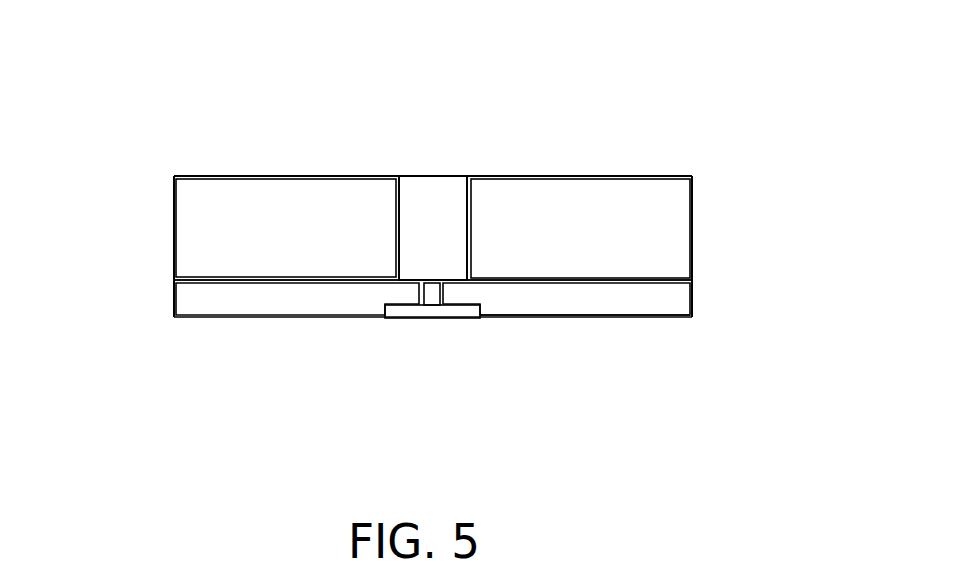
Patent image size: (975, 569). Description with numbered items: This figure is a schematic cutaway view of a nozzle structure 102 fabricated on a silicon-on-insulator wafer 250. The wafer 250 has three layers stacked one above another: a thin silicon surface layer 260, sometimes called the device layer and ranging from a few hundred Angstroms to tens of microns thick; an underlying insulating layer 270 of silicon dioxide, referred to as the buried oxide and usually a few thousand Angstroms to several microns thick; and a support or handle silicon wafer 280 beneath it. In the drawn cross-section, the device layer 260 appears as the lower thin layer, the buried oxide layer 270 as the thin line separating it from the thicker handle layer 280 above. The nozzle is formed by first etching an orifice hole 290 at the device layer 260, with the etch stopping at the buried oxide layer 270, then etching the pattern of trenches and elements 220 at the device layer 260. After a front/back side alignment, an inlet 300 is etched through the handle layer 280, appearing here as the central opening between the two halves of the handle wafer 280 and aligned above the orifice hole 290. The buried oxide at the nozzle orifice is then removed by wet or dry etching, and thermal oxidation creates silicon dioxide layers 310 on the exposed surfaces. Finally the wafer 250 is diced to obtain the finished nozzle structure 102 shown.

The display device / assembly 102 is at (670, 108).
The elements 220 is at (286, 303).
The SOI wafer 250 is at (155, 180).
The surface layer 260 is at (653, 303).
The insulating layer 270 is at (692, 280).
The handle silicon wafer 280 is at (653, 227).
The orifice hole 290 is at (432, 292).
The inlet 300 is at (445, 183).
The silicon dioxide layers 310 is at (267, 180).